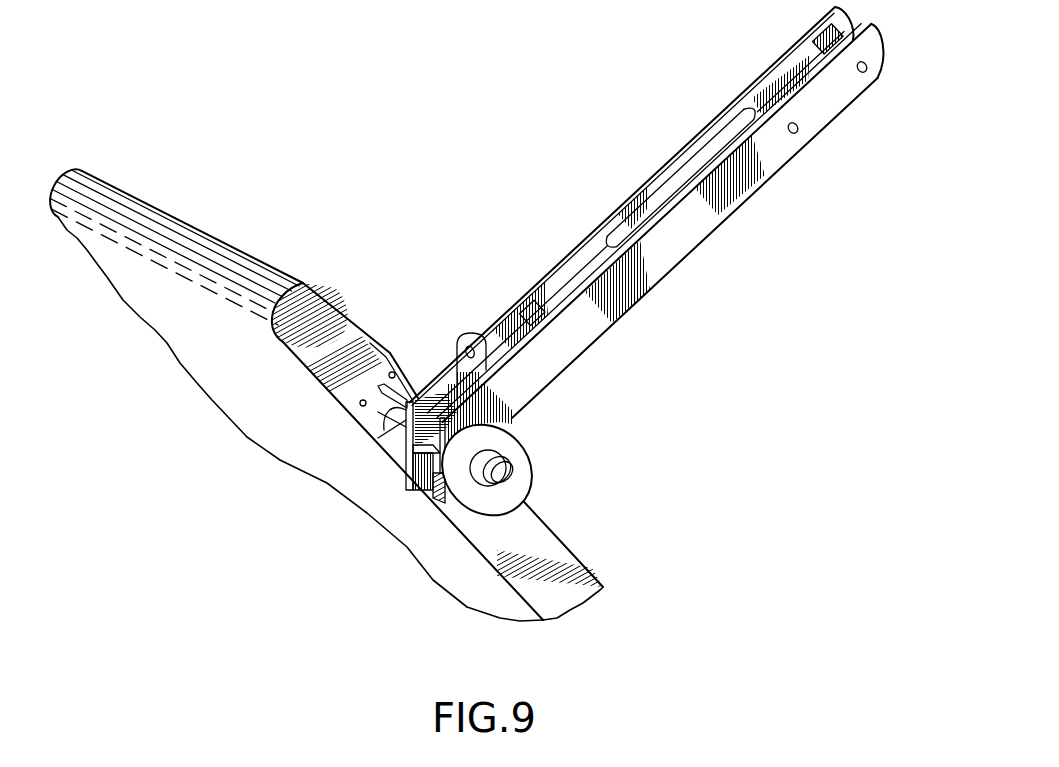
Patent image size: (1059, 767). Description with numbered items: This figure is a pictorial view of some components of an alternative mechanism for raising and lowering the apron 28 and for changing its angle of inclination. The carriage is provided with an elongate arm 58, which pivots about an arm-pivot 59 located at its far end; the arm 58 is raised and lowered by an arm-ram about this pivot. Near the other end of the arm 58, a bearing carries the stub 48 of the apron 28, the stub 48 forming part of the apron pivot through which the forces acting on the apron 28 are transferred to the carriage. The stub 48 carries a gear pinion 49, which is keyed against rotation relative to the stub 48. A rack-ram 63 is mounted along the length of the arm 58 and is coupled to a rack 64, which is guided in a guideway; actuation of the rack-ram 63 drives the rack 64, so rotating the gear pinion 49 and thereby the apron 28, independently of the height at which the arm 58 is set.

The apron 28 is at (347, 478).
The stub 48 is at (510, 472).
The gear pinion 49 is at (522, 455).
The arm 58 is at (690, 232).
The arm-pivot 59 is at (865, 71).
The rack-ram 63 is at (710, 152).
The rack 64 is at (520, 303).